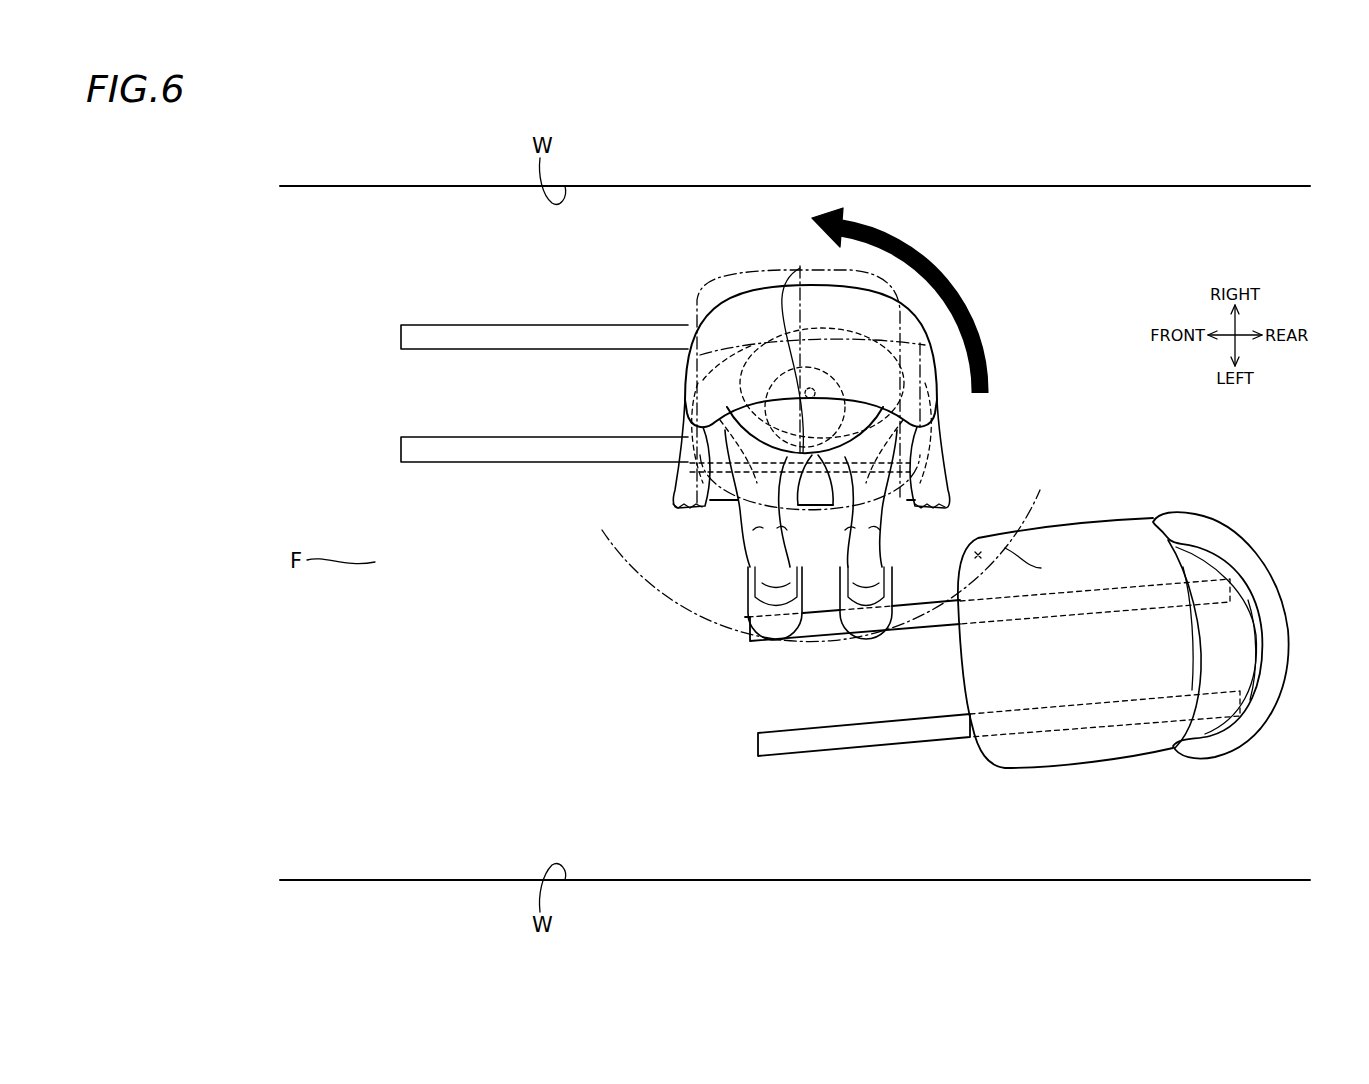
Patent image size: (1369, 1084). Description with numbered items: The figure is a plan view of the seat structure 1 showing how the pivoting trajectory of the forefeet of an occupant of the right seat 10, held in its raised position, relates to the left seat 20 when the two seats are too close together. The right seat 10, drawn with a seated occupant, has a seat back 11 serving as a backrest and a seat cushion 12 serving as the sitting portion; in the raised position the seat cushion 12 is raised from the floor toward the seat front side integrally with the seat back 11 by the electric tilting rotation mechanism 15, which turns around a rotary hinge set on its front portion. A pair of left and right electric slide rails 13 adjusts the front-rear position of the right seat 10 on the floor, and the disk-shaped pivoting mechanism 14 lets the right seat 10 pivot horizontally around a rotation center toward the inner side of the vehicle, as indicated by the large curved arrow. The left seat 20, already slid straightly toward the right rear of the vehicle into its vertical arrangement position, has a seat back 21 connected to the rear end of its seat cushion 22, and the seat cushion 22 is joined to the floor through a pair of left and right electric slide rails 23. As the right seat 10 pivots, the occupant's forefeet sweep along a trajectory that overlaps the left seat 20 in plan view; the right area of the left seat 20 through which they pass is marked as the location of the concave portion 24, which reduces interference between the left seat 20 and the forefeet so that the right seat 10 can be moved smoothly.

The seat structure 1 is at (440, 254).
The right seat 10 is at (790, 262).
The seat back 11 is at (747, 307).
The seat cushion 12 is at (722, 487).
The electric slide rails 13 is at (425, 338).
The pivoting mechanism 14 is at (753, 343).
The electric tilting rotation mechanism 15 is at (910, 445).
The left seat 20 is at (1231, 755).
The seat back 21 is at (1258, 722).
The seat cushion 22 is at (1066, 754).
The electric slide rails 23 is at (832, 740).
The concave portion 24 is at (979, 550).